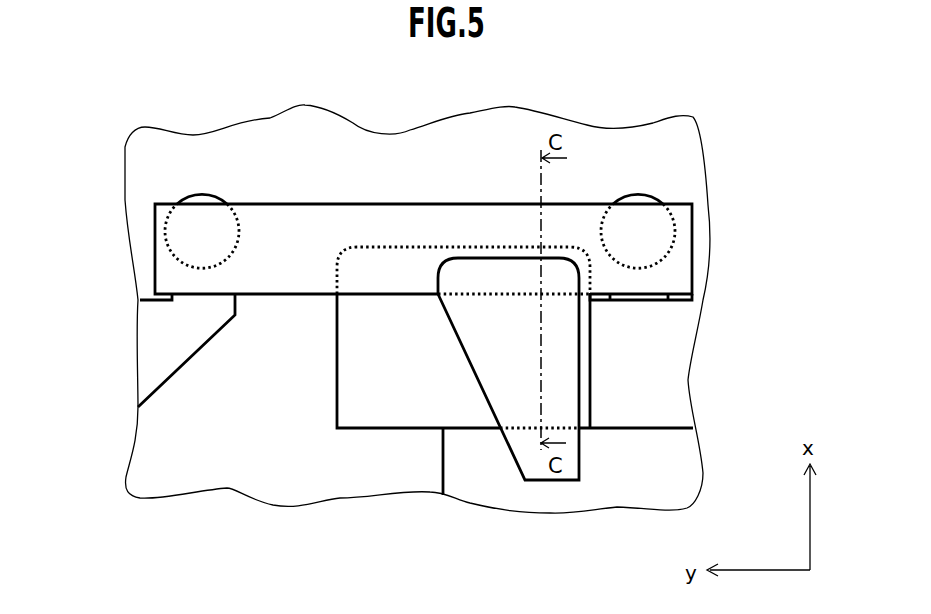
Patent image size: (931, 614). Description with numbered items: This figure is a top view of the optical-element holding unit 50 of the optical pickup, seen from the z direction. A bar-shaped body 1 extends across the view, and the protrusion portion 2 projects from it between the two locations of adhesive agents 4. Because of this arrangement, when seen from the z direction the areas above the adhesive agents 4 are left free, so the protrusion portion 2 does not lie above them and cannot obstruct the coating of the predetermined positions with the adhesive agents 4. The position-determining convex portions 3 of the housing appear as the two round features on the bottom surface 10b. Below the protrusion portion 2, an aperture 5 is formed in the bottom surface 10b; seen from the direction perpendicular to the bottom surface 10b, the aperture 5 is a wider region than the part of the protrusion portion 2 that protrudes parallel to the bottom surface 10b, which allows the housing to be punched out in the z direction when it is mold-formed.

The optical-element holding unit 50 is at (106, 124).
The bar 1 is at (337, 217).
The protrusion portion 2 is at (512, 280).
The position-determining convex portions 3 is at (225, 202).
The adhesive agents 4 is at (203, 300).
The aperture 5 is at (407, 390).
The bottom surface 10b is at (227, 473).